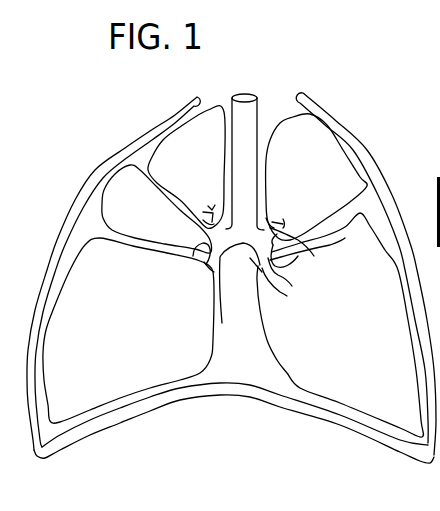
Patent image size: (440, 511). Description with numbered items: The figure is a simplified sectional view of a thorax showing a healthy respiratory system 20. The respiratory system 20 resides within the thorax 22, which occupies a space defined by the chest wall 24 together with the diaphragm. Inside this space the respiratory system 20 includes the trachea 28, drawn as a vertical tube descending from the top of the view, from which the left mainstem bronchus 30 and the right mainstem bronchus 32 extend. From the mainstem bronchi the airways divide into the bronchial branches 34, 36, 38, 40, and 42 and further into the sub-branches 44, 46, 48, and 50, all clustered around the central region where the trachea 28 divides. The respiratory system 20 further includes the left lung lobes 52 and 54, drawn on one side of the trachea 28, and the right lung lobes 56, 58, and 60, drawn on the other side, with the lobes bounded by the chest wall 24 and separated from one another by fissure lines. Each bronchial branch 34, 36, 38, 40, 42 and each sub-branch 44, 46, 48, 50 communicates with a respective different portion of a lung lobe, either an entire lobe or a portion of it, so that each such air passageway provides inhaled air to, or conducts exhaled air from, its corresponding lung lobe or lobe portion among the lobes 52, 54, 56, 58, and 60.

The respiratory system 20 is at (282, 64).
The thorax 22 is at (249, 374).
The chest wall 24 is at (119, 153).
The trachea 28 is at (231, 99).
The left mainstem bronchus 30 is at (287, 296).
The right mainstem bronchus 32 is at (222, 323).
The bronchial branch 34 is at (304, 247).
The bronchial branch 36 is at (292, 286).
The bronchial branch 38 is at (212, 265).
The bronchial branch 40 is at (198, 254).
The bronchial branch 42 is at (207, 216).
The sub-branch 44 is at (277, 223).
The sub-branch 46 is at (286, 223).
The sub-branch 48 is at (205, 211).
The sub-branch 50 is at (212, 203).
The left lung lobe 52 is at (321, 181).
The left lung lobe 54 is at (354, 339).
The right lung lobe 56 is at (184, 158).
The right lung lobe 58 is at (131, 217).
The right lung lobe 60 is at (129, 349).